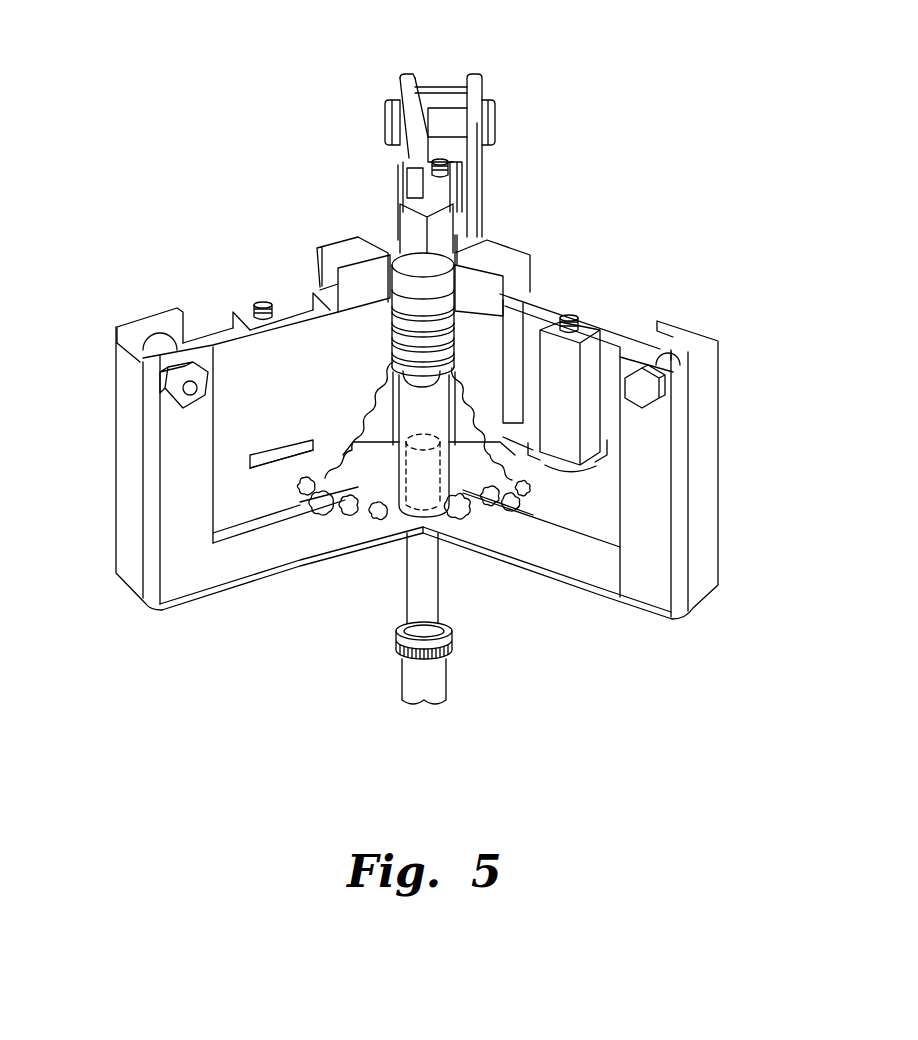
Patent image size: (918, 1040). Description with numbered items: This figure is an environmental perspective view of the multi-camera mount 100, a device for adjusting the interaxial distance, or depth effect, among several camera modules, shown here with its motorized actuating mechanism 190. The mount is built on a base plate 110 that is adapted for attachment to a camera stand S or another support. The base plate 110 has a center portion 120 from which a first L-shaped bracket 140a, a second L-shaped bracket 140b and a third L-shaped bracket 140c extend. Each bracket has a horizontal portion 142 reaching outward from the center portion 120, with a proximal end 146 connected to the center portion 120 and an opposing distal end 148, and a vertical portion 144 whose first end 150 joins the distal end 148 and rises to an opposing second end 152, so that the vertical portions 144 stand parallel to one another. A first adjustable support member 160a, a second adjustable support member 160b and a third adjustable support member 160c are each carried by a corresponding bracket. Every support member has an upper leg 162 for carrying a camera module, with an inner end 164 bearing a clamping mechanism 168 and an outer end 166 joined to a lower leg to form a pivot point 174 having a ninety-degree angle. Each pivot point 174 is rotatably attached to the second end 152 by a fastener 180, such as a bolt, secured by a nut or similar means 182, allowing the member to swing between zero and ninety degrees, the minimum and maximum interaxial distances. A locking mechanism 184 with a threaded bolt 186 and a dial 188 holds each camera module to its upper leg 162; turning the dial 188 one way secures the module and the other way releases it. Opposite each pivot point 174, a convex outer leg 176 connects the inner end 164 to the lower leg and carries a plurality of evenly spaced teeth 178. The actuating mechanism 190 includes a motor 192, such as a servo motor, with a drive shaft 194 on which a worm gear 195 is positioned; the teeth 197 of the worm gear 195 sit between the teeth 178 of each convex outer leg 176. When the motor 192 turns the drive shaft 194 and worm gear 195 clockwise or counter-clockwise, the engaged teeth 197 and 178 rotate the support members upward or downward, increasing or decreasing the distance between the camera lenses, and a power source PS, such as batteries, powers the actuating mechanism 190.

The multi-camera mount 100 is at (178, 98).
The base plate 110 is at (352, 600).
The center portion 120 is at (430, 495).
The first L-shaped bracket 140a is at (718, 352).
The second L-shaped bracket 140b is at (116, 328).
The third L-shaped bracket 140c is at (453, 82).
The horizontal portion 142 is at (302, 559).
The vertical portion 144 is at (208, 485).
The proximal end 146 is at (388, 596).
The distal end 148 is at (212, 567).
The first end 150 is at (125, 549).
The second end 152 is at (160, 318).
The first adjustable support member 160a is at (508, 347).
The second adjustable support member 160b is at (381, 344).
The third adjustable support member 160c is at (425, 165).
The upper leg 162 is at (242, 312).
The inner end 164 is at (328, 285).
The outer end 166 is at (670, 342).
The clamping mechanism 168 is at (383, 294).
The pivot point 174 is at (147, 330).
The convex outer leg 176 is at (357, 424).
The teeth 178 is at (356, 513).
The fastener 180 is at (200, 394).
The securing means 182 is at (200, 370).
The locking mechanism 184 is at (307, 470).
The threaded bolt 186 is at (263, 302).
The dial 188 is at (300, 450).
The actuating mechanism 190 is at (390, 515).
The motor 192 is at (443, 416).
The drive shaft 194 is at (417, 380).
The worm gear 195 is at (420, 250).
The teeth 197 is at (416, 335).
The power source PS is at (405, 497).
The camera stand S is at (452, 668).